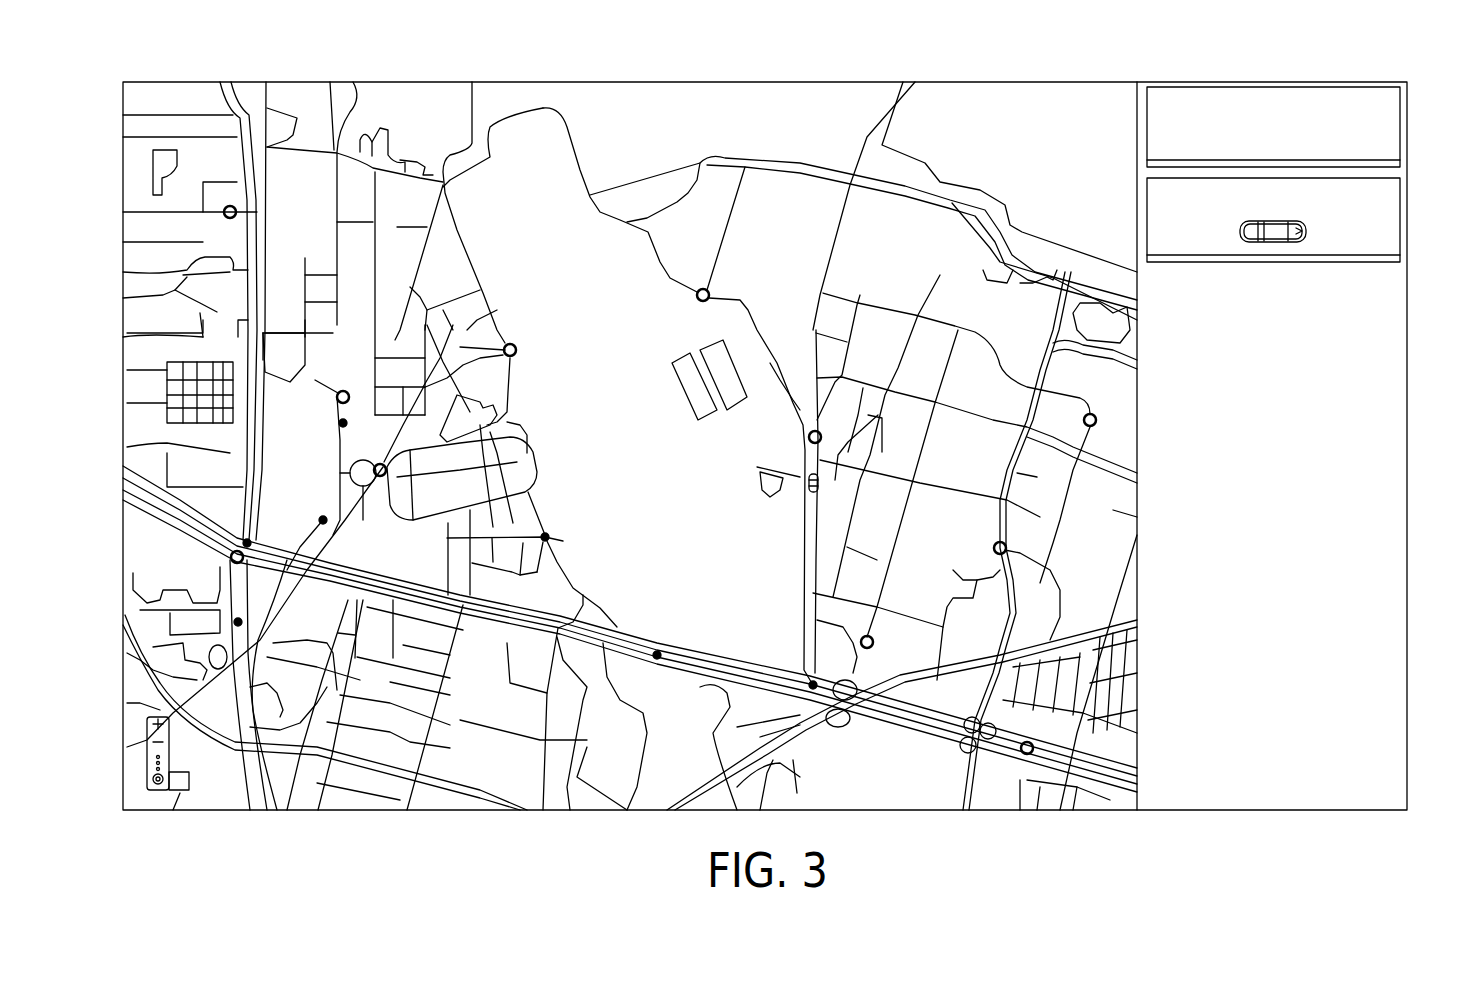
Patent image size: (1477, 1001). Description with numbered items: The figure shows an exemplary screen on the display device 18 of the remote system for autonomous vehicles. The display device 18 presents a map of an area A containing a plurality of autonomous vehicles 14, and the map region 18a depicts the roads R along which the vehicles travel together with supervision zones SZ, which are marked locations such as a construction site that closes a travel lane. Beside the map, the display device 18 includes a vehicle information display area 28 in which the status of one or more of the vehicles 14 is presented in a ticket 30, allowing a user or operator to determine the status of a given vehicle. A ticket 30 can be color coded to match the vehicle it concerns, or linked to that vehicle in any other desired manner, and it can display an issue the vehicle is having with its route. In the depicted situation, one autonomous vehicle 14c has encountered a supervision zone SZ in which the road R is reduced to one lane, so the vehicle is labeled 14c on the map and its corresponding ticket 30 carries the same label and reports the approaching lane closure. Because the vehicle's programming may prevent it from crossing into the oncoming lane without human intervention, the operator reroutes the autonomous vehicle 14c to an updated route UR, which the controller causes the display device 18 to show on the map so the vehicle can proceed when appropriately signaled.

The autonomous vehicle 14 is at (243, 542).
The autonomous vehicle 14c is at (1272, 243).
The display device 18 is at (1043, 82).
The map region 18a is at (1110, 112).
The vehicle information display area 28 is at (1387, 343).
The ticket 30 is at (1400, 127).
The area A is at (638, 123).
The road R is at (660, 270).
The supervision zone SZ is at (224, 214).
The updated route UR is at (336, 400).